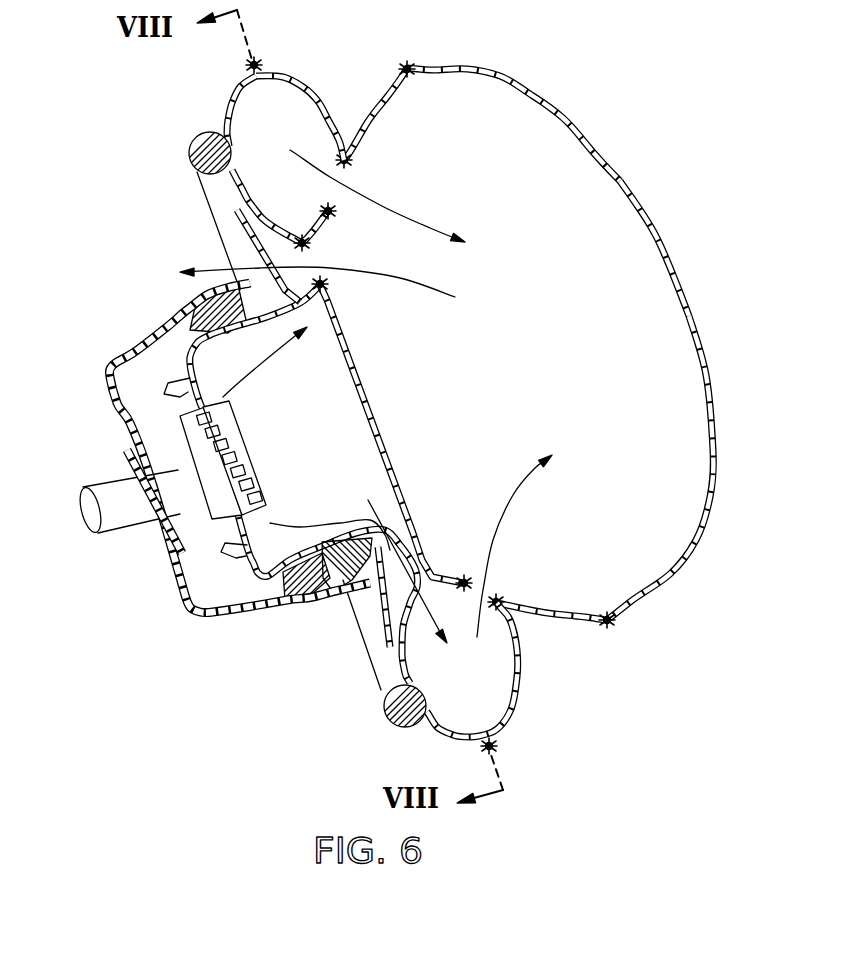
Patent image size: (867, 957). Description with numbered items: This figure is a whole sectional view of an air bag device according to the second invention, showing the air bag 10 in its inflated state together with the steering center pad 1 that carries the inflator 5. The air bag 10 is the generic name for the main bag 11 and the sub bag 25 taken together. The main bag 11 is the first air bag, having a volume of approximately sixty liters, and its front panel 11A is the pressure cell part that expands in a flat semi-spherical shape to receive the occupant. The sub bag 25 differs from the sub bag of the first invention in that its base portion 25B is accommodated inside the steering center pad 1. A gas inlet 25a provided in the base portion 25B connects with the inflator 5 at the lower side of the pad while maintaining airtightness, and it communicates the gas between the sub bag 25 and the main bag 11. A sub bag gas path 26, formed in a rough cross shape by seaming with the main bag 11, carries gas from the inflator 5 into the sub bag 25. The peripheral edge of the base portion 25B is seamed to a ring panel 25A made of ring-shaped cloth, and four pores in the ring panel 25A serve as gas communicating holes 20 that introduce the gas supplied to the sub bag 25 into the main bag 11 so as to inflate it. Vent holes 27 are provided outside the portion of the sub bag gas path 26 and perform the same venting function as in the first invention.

The steering center pad 1 is at (249, 622).
The inflator 5 is at (248, 450).
The air bag 10 is at (626, 152).
The main bag 11 is at (660, 243).
The front panel 11A is at (697, 328).
The gas communicating holes 20 is at (336, 170).
The sub bag 25 is at (210, 116).
The ring panel 25A is at (298, 80).
The base portion 25B is at (226, 100).
The gas inlet 25a is at (250, 520).
The sub bag gas path 26 is at (398, 572).
The vent holes 27 is at (297, 258).